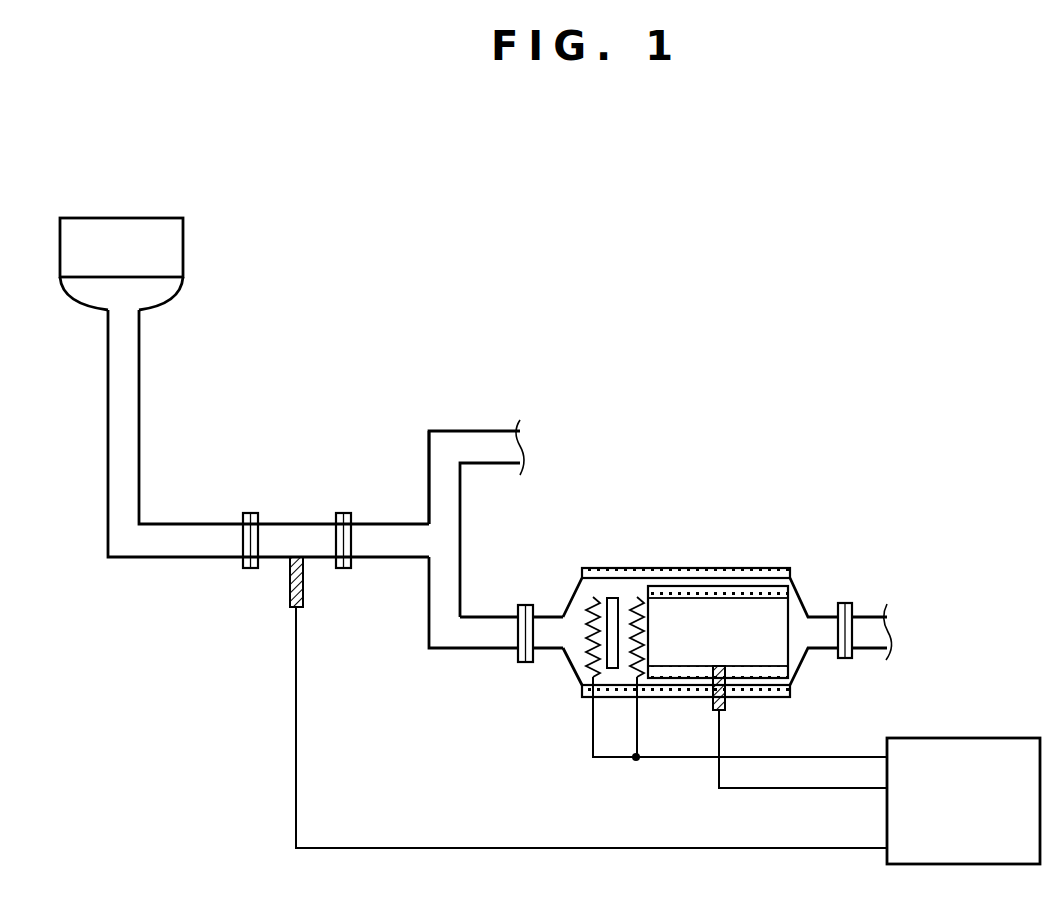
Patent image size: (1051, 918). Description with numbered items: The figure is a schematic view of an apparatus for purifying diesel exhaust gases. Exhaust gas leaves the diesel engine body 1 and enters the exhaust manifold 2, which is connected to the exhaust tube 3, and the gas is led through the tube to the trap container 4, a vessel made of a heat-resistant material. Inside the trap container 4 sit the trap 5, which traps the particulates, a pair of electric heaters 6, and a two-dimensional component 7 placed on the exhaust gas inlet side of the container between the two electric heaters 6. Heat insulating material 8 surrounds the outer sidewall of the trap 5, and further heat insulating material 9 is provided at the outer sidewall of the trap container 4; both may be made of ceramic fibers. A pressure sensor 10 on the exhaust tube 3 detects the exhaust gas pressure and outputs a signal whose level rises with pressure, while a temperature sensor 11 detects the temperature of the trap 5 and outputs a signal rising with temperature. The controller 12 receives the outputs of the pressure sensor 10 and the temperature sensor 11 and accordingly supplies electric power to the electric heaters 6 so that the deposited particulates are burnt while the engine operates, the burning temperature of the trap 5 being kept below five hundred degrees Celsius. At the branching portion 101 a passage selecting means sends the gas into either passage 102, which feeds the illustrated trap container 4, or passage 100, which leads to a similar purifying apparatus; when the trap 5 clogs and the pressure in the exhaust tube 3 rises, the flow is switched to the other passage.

The diesel engine body 1 is at (175, 240).
The exhaust manifold 2 is at (98, 298).
The exhaust tube 3 is at (178, 550).
The trap container 4 is at (800, 602).
The trap 5 is at (780, 650).
The electric heaters 6 is at (588, 612).
The two-dimensional component 7 is at (612, 668).
The heat insulating material 8 is at (734, 593).
The heat insulating material 9 is at (676, 576).
The pressure sensor 10 is at (303, 583).
The temperature sensor 11 is at (725, 706).
The controller 12 is at (978, 750).
The passage 100 is at (490, 442).
The branching portion 101 is at (440, 488).
The passage 102 is at (482, 640).